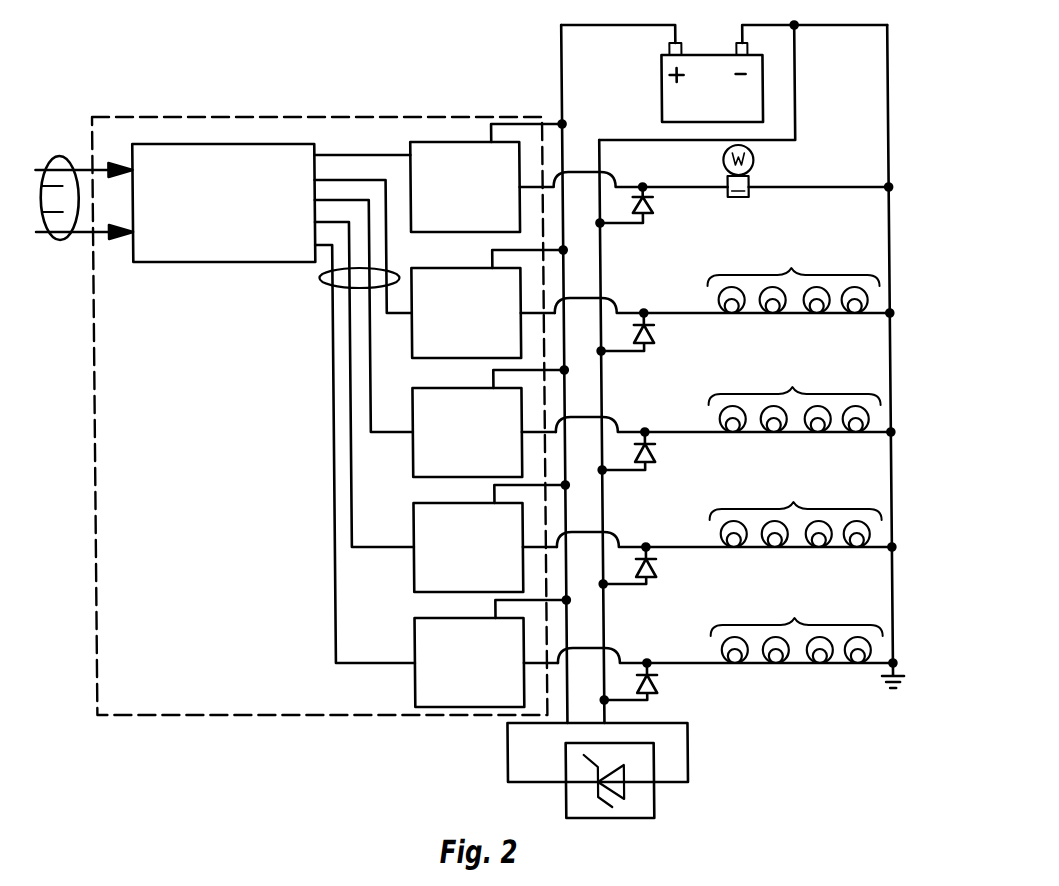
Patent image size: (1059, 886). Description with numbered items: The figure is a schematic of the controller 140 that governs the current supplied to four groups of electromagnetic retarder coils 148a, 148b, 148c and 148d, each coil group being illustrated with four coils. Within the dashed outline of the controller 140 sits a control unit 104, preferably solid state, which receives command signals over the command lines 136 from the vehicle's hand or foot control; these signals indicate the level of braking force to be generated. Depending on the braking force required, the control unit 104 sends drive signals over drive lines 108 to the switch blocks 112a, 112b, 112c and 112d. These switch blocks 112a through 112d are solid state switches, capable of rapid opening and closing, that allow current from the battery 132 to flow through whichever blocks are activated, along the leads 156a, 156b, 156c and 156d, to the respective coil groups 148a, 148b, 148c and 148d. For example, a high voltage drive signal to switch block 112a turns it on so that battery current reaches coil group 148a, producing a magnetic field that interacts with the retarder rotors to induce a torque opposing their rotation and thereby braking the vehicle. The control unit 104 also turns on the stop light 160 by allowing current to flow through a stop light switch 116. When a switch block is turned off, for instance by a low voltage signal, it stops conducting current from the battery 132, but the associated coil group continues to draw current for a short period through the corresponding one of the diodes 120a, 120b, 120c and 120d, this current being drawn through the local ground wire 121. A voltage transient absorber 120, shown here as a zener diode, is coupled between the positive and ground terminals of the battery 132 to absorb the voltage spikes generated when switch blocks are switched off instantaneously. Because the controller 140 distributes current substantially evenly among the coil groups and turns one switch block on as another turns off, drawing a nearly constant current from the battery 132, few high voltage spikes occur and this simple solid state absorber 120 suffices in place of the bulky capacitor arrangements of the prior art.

The control unit 104 is at (162, 263).
The drive lines 108 is at (318, 280).
The switch block 112a is at (428, 268).
The switch block 112b is at (410, 414).
The switch block 112c is at (409, 523).
The switch block 112d is at (410, 643).
The stop light switch 116 is at (428, 142).
The voltage transient absorber 120 is at (560, 792).
The diode 120a is at (657, 335).
The diode 120b is at (657, 454).
The diode 120c is at (657, 568).
The diode 120d is at (657, 684).
The local ground wire 121 is at (682, 738).
The battery 132 is at (662, 106).
The command lines 136 is at (55, 242).
The controller 140 is at (112, 718).
The coil group 148a is at (789, 268).
The coil group 148b is at (789, 387).
The coil group 148c is at (789, 502).
The coil group 148d is at (789, 618).
The lead 156a is at (606, 303).
The lead 156b is at (606, 421).
The lead 156c is at (646, 513).
The lead 156d is at (610, 653).
The stop light 160 is at (753, 157).